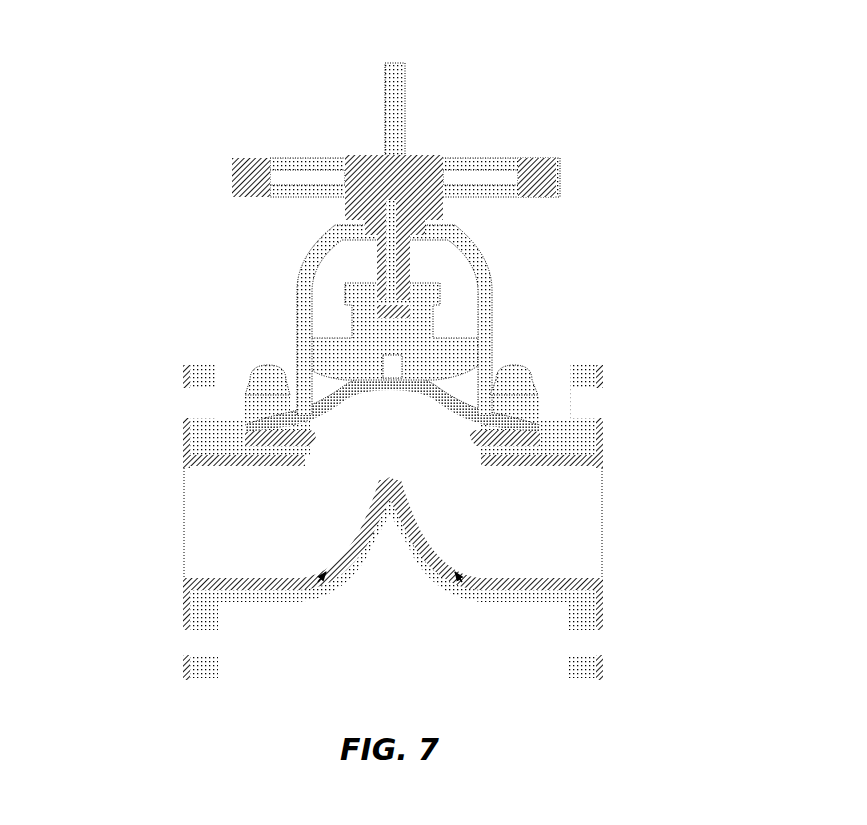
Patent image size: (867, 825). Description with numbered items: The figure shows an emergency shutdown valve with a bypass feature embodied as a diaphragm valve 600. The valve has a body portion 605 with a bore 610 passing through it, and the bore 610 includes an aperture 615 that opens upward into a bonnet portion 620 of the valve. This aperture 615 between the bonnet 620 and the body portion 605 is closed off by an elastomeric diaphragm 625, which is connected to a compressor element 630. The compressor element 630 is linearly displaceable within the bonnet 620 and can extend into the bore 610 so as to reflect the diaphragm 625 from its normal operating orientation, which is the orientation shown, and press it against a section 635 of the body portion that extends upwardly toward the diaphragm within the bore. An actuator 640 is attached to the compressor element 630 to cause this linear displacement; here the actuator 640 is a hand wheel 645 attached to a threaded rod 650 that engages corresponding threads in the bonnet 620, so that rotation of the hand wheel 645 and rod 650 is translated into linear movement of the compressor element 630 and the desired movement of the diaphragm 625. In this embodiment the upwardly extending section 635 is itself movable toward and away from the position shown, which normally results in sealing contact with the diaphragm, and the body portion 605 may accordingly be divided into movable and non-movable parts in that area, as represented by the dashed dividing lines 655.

The diaphragm valve 600 is at (119, 76).
The body portion 605 is at (667, 440).
The bore 610 is at (585, 583).
The aperture 615 is at (343, 440).
The bonnet portion 620 is at (528, 288).
The elastomeric diaphragm 625 is at (322, 406).
The compressor element 630 is at (335, 347).
The section of the body portion 635 is at (391, 495).
The actuator 640 is at (448, 130).
The hand wheel 645 is at (240, 183).
The threaded rod 650 is at (390, 203).
The dashed dividing lines 655 is at (474, 585).